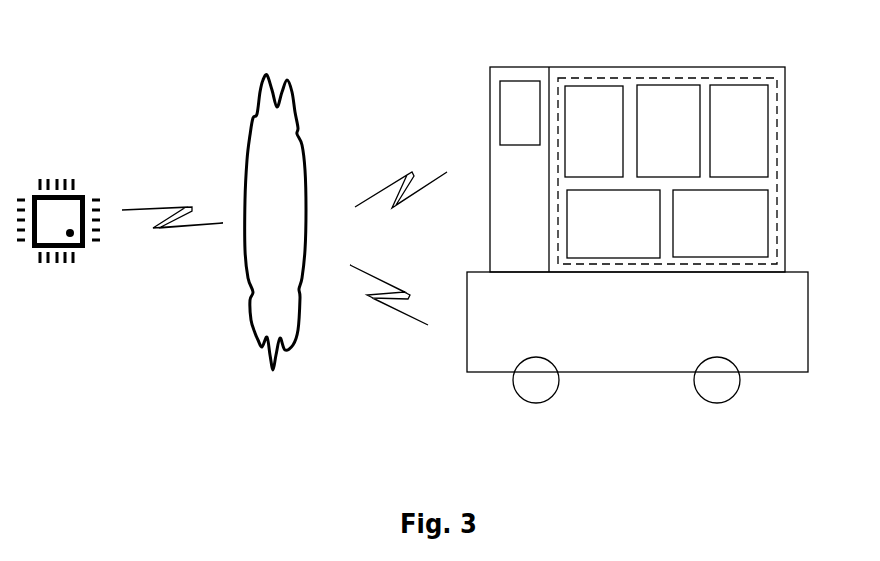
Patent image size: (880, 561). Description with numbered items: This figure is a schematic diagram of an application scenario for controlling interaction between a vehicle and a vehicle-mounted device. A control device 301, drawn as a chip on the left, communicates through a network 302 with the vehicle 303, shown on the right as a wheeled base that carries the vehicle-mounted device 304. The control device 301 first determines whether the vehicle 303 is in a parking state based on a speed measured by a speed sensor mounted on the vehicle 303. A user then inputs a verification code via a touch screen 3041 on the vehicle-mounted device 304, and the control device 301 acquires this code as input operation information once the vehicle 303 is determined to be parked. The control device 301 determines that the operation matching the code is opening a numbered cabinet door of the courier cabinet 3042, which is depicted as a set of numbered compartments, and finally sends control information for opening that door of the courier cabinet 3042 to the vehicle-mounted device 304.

The control device 301 is at (83, 190).
The network 302 is at (275, 222).
The vehicle 303 is at (797, 270).
The vehicle-mounted device 304 is at (665, 147).
The touch screen 3041 is at (528, 80).
The courier cabinet 3042 is at (777, 147).